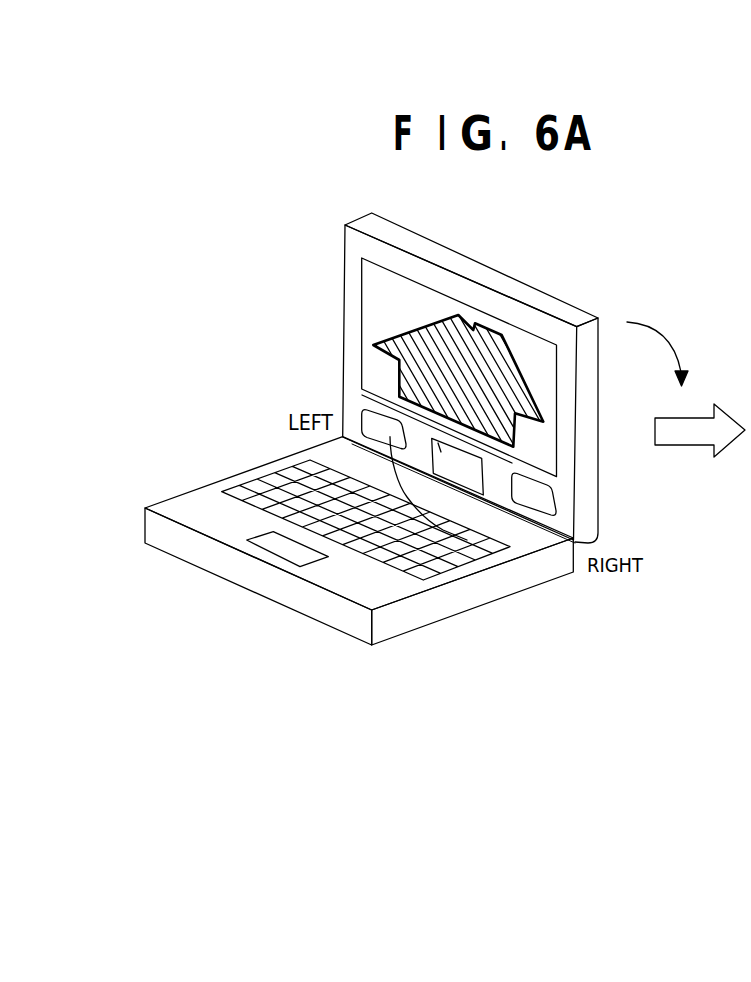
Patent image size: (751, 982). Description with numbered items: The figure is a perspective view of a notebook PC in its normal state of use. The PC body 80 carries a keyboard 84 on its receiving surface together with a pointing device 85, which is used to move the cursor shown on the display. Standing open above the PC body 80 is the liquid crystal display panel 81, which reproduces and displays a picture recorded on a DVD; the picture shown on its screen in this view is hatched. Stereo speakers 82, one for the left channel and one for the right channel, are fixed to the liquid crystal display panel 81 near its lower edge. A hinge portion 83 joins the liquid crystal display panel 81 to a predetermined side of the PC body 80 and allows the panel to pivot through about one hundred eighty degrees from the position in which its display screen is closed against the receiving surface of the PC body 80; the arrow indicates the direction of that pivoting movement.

The PC body 80 is at (463, 597).
The liquid crystal display panel 81 is at (578, 311).
The stereo speakers 82 is at (532, 497).
The hinge portion 83 is at (372, 404).
The keyboard 84 is at (252, 483).
The pointing device 85 is at (287, 552).